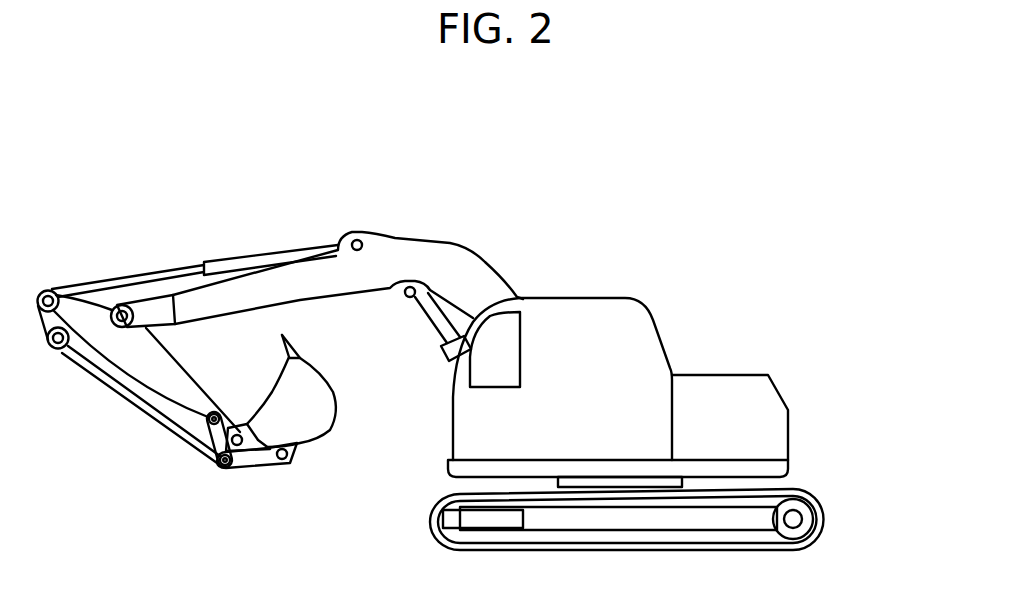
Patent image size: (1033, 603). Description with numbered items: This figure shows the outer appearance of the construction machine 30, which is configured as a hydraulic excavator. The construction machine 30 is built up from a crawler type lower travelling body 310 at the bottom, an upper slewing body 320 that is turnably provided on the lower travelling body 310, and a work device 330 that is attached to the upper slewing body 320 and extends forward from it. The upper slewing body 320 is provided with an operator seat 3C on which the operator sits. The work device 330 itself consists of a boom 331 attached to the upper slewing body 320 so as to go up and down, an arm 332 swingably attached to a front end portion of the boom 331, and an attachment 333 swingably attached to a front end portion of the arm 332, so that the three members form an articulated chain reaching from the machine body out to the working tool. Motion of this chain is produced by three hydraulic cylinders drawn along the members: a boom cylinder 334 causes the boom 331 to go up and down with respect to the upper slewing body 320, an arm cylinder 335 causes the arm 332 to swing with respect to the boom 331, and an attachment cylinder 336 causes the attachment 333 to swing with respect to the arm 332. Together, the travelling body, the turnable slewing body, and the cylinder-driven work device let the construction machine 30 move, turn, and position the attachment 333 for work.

The construction machine 30 is at (791, 220).
The lower travelling body 310 is at (833, 510).
The upper slewing body 320 is at (823, 425).
The operator seat 3C is at (473, 432).
The work device 330 is at (158, 203).
The boom 331 is at (482, 268).
The arm 332 is at (163, 367).
The attachment 333 is at (317, 417).
The boom cylinder 334 is at (437, 325).
The arm cylinder 335 is at (265, 260).
The attachment cylinder 336 is at (130, 397).